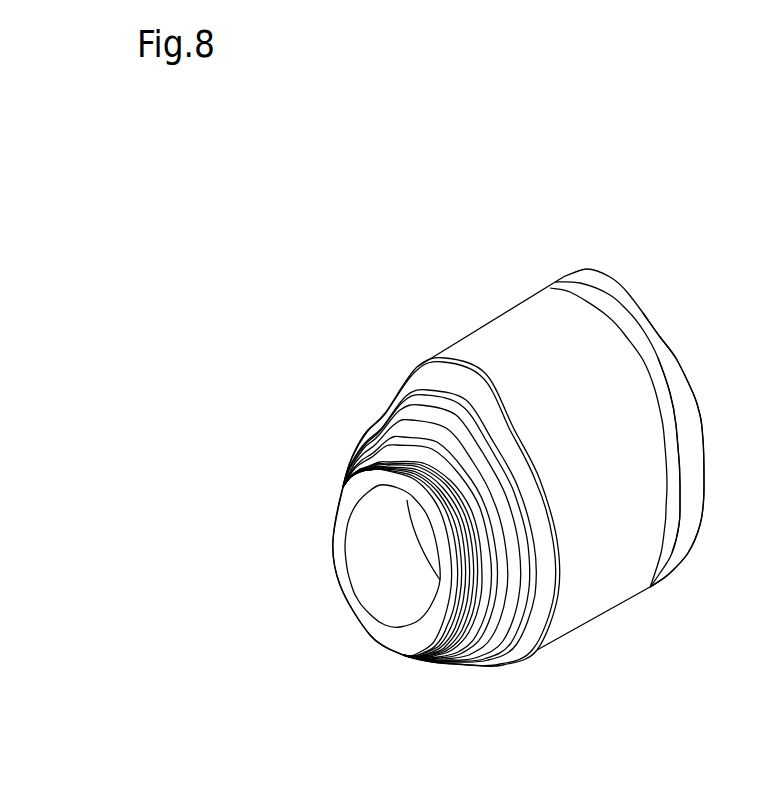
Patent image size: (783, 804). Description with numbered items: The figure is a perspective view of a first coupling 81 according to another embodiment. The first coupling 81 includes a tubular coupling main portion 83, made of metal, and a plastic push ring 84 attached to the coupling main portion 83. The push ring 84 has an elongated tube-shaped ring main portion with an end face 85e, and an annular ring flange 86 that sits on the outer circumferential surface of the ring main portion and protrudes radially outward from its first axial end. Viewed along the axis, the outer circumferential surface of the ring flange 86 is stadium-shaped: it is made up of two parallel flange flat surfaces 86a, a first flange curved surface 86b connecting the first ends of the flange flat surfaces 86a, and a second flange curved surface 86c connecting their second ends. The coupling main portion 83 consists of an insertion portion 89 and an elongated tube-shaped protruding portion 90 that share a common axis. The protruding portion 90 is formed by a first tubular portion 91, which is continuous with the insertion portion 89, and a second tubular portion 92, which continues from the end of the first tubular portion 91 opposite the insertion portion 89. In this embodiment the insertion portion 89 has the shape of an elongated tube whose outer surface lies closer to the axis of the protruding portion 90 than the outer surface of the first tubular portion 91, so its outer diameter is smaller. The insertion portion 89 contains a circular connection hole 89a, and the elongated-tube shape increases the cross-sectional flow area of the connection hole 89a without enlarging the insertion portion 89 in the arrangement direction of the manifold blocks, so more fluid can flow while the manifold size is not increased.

The first coupling 81 is at (350, 365).
The coupling main portion 83 is at (612, 612).
The push ring 84 is at (687, 553).
The end face of the ring main portion 85e is at (703, 431).
The ring flange 86 is at (636, 294).
The flange flat surfaces 86a is at (697, 473).
The first flange curved surface 86b is at (605, 280).
The second flange curved surface 86c is at (662, 572).
The insertion portion 89 is at (372, 457).
The connection hole 89a is at (427, 617).
The protruding portion 90 is at (480, 292).
The first tubular portion 91 is at (437, 407).
The second tubular portion 92 is at (489, 340).